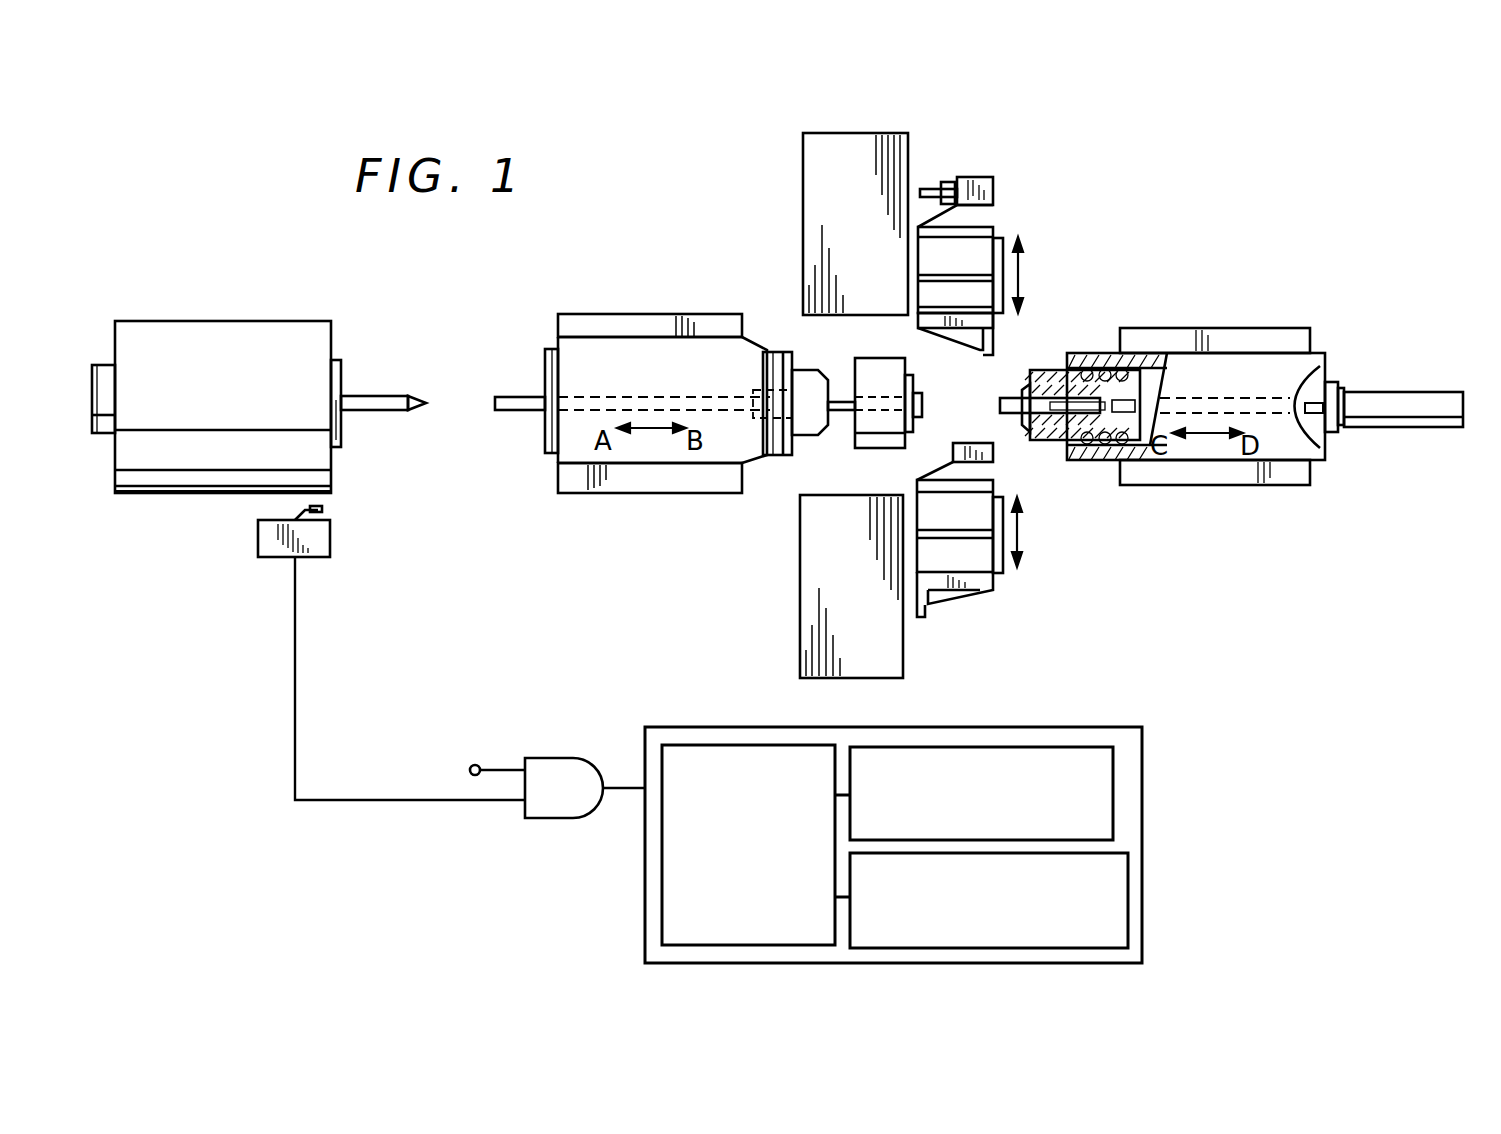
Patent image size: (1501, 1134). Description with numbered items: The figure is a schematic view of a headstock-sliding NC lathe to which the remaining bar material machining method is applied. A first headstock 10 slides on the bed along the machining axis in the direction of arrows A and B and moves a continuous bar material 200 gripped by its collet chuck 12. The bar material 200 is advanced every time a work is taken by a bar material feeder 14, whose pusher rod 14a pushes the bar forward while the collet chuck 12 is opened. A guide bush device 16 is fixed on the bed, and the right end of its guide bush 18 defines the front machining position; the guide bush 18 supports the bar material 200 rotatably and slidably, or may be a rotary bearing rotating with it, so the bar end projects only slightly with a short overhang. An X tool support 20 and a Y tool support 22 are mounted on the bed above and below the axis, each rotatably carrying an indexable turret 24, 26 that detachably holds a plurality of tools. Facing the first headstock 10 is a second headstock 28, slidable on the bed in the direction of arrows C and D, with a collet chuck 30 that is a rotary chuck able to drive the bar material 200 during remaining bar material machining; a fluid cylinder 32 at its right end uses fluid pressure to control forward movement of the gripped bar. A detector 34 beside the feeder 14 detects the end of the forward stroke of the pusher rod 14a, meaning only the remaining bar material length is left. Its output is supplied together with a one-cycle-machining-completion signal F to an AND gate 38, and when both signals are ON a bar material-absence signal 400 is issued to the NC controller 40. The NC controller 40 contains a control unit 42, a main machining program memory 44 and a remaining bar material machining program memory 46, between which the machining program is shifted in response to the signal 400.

The first headstock 10 is at (667, 452).
The collet chuck 12 is at (813, 392).
The bar material feeder 14 is at (272, 340).
The pusher rod 14a is at (386, 396).
The guide bush device 16 is at (871, 376).
The guide bush 18 is at (922, 400).
The X tool support 20 is at (888, 641).
The Y tool support 22 is at (908, 170).
The turret 24 is at (975, 562).
The turret 26 is at (975, 250).
The second headstock 28 is at (1276, 446).
The collet chuck 30 is at (1046, 373).
The fluid cylinder 32 is at (1371, 400).
The detector 34 is at (322, 541).
The AND gate 38 is at (563, 757).
The NC controller 40 is at (1110, 727).
The control unit 42 is at (733, 745).
The main machining program memory 44 is at (1113, 795).
The remaining bar material machining program memory 46 is at (1128, 897).
The bar material 200 is at (504, 396).
The bar material-absence signal 400 is at (612, 792).